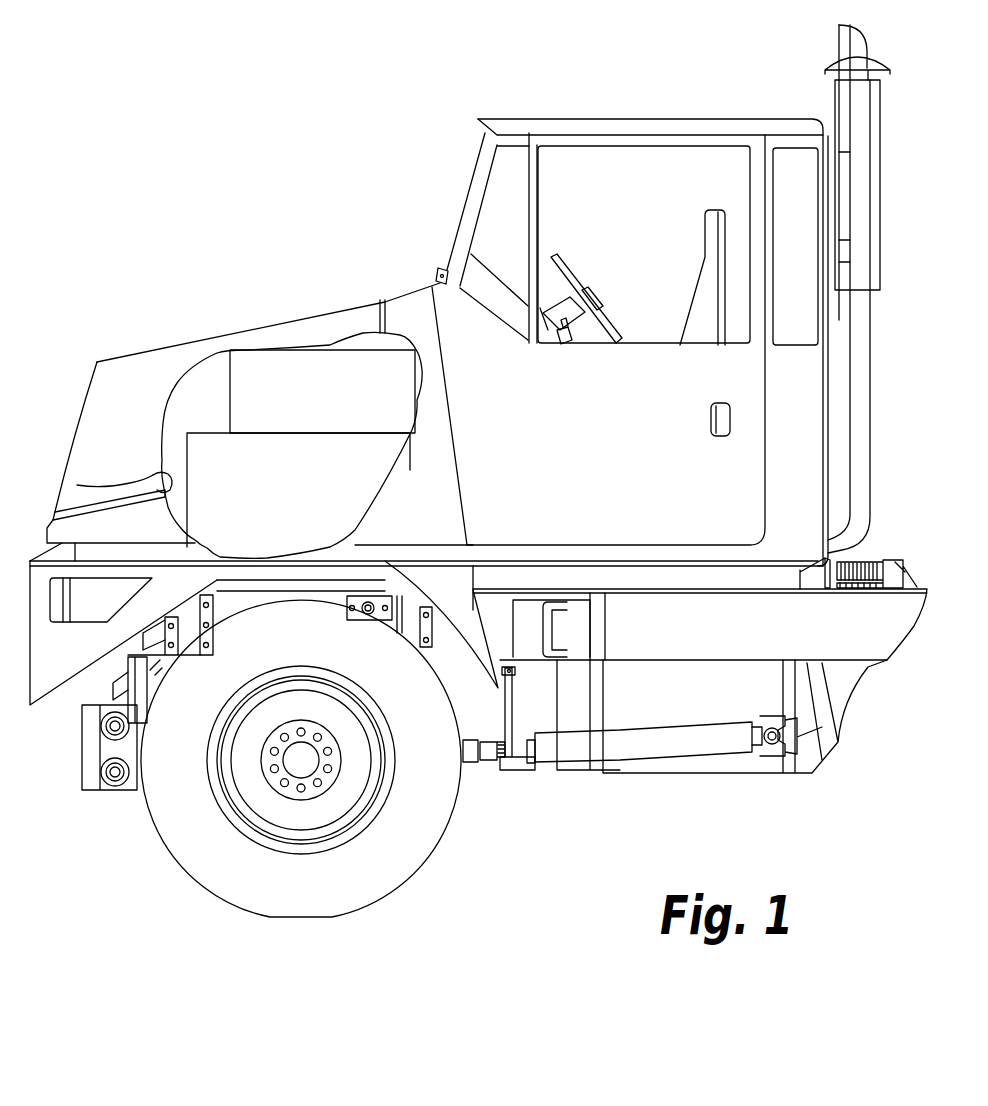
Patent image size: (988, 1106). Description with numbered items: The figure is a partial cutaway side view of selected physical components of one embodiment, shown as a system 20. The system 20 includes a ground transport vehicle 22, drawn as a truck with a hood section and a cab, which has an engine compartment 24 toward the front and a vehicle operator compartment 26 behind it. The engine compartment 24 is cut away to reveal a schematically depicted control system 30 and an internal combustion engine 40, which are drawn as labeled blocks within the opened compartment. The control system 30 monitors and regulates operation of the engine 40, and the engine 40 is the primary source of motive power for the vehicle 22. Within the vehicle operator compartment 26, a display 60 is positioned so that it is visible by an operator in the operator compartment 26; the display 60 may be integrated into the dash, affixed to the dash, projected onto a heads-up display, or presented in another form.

The system 20 is at (130, 230).
The ground transport vehicle 22 is at (112, 349).
The engine compartment 24 is at (77, 485).
The vehicle operator compartment 26 is at (630, 152).
The control system 30 is at (336, 421).
The internal combustion engine 40 is at (304, 529).
The display 60 is at (568, 342).